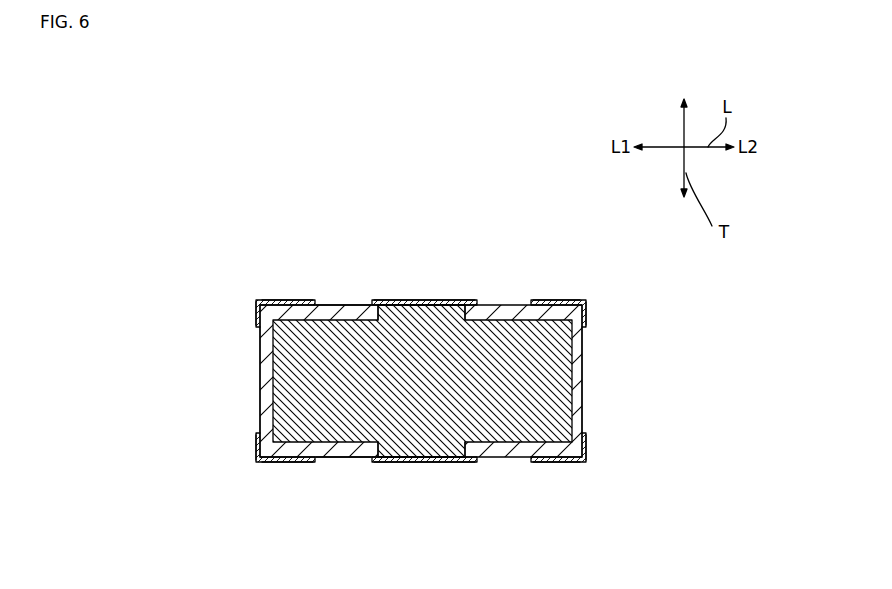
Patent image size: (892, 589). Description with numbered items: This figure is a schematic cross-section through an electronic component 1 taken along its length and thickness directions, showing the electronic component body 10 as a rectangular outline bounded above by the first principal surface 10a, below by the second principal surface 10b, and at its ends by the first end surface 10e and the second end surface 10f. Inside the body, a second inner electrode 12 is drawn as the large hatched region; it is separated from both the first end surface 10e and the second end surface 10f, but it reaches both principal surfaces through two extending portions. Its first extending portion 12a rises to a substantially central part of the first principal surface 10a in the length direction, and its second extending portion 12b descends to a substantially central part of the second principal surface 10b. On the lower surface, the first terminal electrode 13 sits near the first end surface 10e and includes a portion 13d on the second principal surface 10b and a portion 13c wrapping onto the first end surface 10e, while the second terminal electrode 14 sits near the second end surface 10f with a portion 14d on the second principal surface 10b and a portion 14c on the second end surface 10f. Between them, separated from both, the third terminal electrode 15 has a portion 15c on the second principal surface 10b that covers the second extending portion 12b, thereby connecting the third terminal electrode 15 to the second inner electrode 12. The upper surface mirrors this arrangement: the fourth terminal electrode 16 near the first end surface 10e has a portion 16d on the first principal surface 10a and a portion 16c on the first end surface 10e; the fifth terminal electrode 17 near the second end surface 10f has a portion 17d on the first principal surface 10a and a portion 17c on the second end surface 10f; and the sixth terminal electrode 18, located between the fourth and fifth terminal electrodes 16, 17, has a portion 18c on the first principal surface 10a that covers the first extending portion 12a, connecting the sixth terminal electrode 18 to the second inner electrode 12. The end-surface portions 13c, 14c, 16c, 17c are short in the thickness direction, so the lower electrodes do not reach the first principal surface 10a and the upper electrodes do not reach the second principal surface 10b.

The electronic component 1 is at (502, 285).
The electronic component body 10 is at (325, 305).
The first principal surface 10a is at (350, 305).
The second principal surface 10b is at (360, 458).
The first end surface 10e is at (260, 375).
The second end surface 10f is at (583, 368).
The second inner electrode 12 is at (492, 305).
The first extending portion 12a is at (408, 305).
The second extending portion 12b is at (466, 452).
The first terminal electrode 13 is at (270, 465).
The portion of first terminal electrode on first end surface 13c is at (256, 450).
The portion of first terminal electrode on second principal surface 13d is at (286, 462).
The second terminal electrode 14 is at (587, 462).
The portion of second terminal electrode on second end surface 14c is at (590, 443).
The portion of second terminal electrode on second principal surface 14d is at (553, 462).
The third terminal electrode 15 is at (430, 463).
The portion of third terminal electrode on second principal surface 15c is at (405, 462).
The fourth terminal electrode 16 is at (273, 300).
The portion of fourth terminal electrode on first end surface 16c is at (257, 310).
The portion of fourth terminal electrode on first principal surface 16d is at (307, 300).
The fifth terminal electrode 17 is at (576, 300).
The portion of fifth terminal electrode on second end surface 17c is at (588, 312).
The portion of fifth terminal electrode on first principal surface 17d is at (556, 300).
The sixth terminal electrode 18 is at (422, 300).
The portion of sixth terminal electrode on first principal surface 18c is at (445, 300).